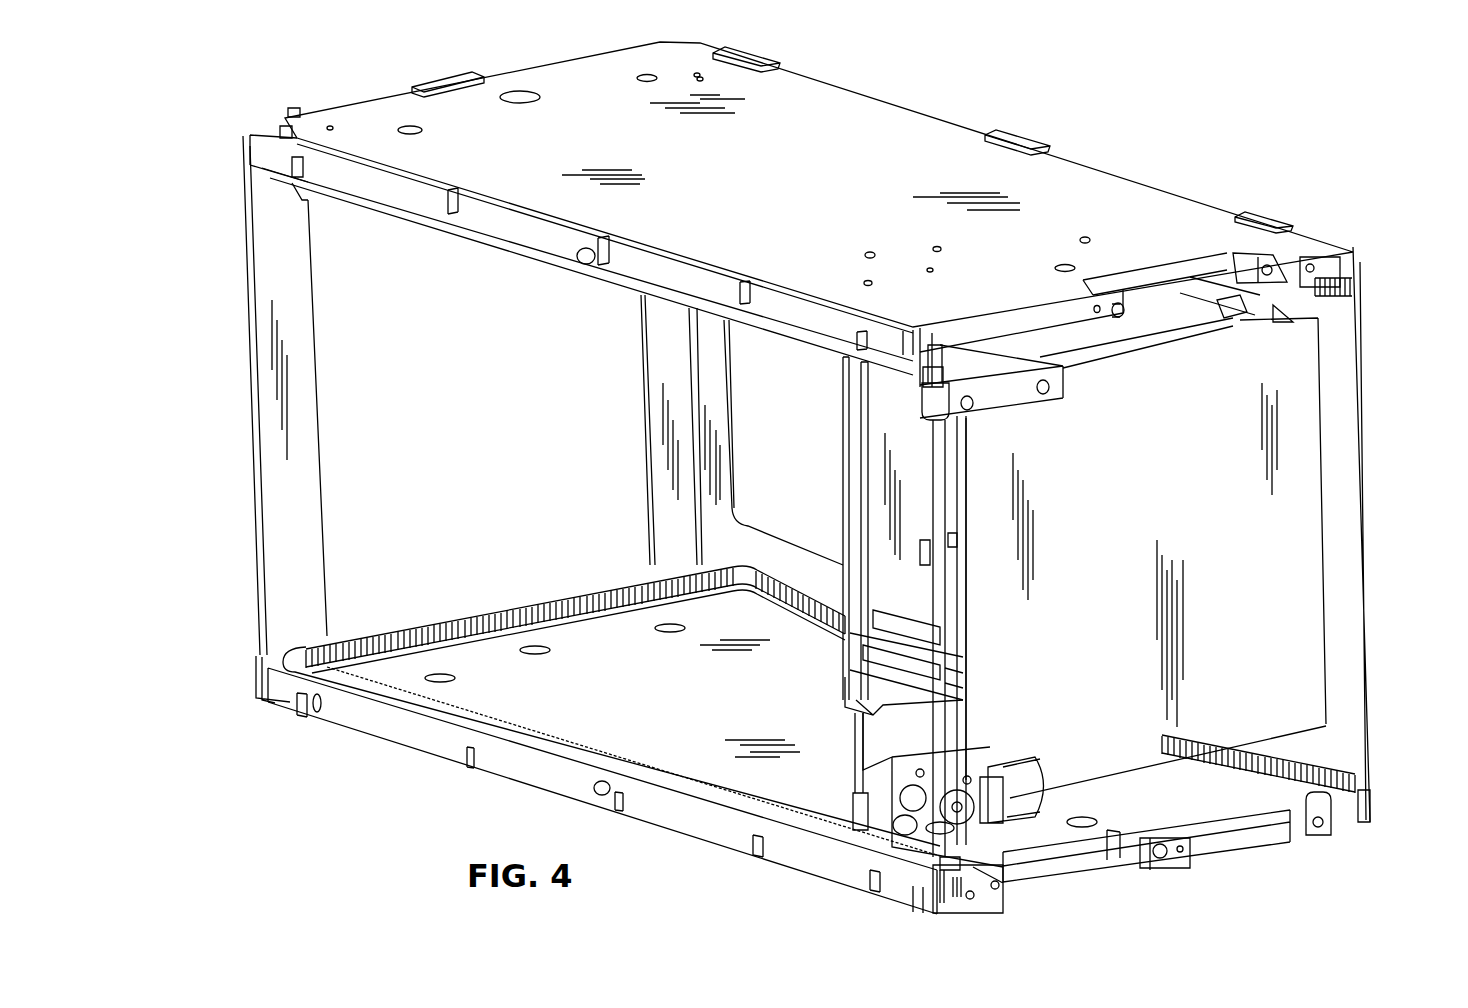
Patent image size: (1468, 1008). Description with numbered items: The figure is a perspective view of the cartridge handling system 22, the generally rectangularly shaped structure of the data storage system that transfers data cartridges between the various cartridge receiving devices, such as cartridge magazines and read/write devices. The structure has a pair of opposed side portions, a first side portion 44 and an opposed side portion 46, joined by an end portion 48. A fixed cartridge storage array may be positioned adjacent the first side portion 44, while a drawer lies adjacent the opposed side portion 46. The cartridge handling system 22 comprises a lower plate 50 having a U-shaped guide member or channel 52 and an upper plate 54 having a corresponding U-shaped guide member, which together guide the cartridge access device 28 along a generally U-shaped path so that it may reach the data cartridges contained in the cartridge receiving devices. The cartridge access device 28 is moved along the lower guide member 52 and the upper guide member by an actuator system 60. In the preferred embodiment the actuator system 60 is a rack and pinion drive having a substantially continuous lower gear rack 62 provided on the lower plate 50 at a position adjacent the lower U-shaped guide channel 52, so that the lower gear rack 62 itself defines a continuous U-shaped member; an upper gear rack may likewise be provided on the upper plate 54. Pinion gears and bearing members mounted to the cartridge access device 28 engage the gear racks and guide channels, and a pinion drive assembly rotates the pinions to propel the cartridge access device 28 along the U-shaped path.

The cartridge handling system 22 is at (240, 222).
The upper plate 54 is at (810, 183).
The end portion 48 is at (632, 403).
The cartridge access device 28 is at (826, 477).
The opposed side portion 46 is at (1370, 630).
The first side portion 44 is at (380, 722).
The lower U-shaped guide member 52 is at (590, 624).
The lower gear rack 62 is at (556, 590).
The lower plate 50 is at (762, 698).
The actuator system 60 is at (842, 806).